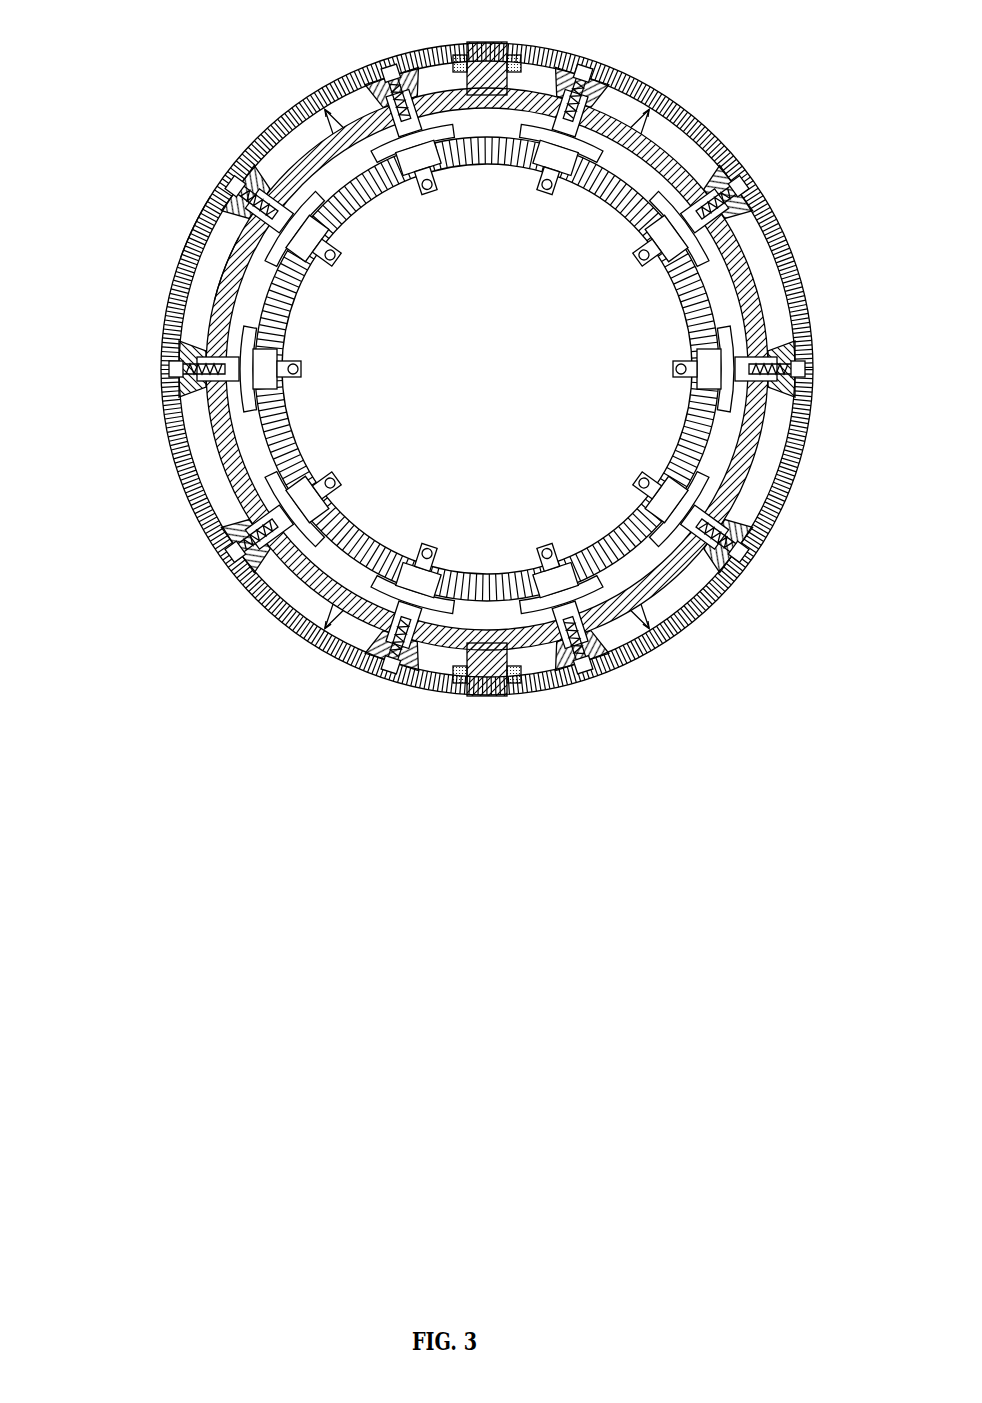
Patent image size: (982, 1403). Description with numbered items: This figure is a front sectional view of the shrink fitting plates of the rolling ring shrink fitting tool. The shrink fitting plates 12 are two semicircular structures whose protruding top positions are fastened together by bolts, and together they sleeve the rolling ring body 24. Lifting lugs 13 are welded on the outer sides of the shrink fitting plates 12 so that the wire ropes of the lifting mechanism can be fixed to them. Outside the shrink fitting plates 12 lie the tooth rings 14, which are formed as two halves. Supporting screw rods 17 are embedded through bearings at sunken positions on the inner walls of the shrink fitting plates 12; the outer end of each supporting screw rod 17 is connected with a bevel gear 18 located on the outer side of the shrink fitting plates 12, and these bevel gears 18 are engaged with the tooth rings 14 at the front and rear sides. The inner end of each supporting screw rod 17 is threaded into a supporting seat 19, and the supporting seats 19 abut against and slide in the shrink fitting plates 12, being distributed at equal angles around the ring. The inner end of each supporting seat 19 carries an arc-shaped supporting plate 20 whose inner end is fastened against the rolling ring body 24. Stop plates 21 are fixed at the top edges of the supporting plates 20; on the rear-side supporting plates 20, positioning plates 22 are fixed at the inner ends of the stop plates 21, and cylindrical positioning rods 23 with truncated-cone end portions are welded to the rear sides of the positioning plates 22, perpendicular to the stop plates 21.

The shrink fitting plate 12 is at (539, 369).
The lifting lug 13 is at (276, 67).
The tooth ring 14 is at (430, 369).
The supporting screw rod 17 is at (133, 260).
The bevel gear 18 is at (183, 142).
The supporting seat 19 is at (153, 332).
The supporting plate 20 is at (365, 300).
The stop plate 21 is at (586, 241).
The positioning plate 22 is at (465, 245).
The positioning rod 23 is at (383, 449).
The rolling ring body 24 is at (760, 535).